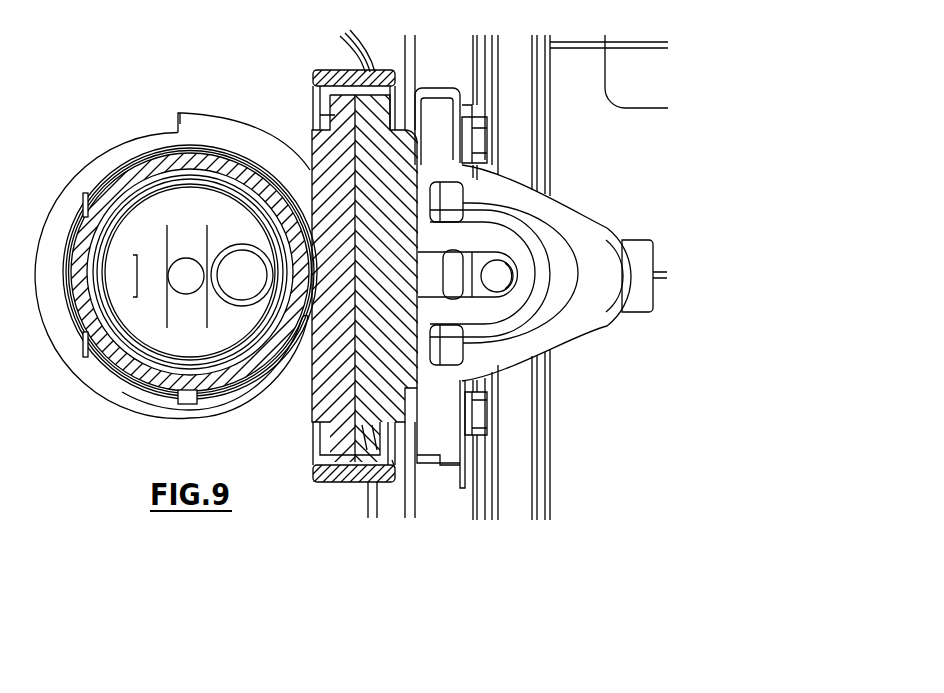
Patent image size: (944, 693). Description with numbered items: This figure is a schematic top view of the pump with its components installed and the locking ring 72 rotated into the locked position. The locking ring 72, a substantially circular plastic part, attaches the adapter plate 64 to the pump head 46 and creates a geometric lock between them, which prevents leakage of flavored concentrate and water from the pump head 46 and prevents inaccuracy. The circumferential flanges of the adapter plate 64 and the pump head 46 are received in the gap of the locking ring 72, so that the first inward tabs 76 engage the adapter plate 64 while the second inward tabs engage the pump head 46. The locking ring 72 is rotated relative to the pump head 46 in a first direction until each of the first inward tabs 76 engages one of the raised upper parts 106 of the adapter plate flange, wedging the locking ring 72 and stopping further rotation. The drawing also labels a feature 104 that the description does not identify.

The pump head 46 is at (331, 190).
The adapter plate 64 is at (408, 160).
The locking ring 72 is at (318, 485).
The first inward tabs 76 is at (360, 70).
The seal 104 is at (372, 443).
The raised upper part 106 is at (408, 100).